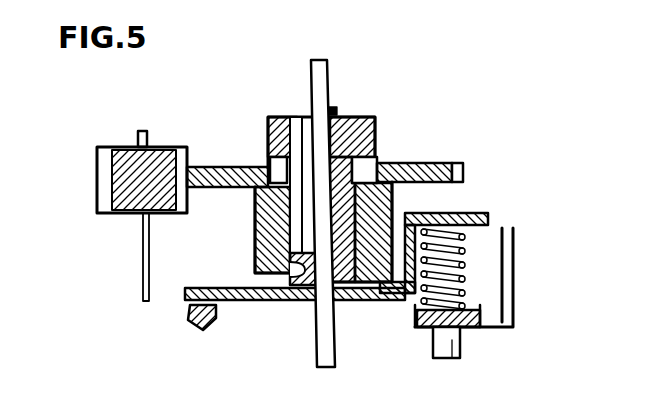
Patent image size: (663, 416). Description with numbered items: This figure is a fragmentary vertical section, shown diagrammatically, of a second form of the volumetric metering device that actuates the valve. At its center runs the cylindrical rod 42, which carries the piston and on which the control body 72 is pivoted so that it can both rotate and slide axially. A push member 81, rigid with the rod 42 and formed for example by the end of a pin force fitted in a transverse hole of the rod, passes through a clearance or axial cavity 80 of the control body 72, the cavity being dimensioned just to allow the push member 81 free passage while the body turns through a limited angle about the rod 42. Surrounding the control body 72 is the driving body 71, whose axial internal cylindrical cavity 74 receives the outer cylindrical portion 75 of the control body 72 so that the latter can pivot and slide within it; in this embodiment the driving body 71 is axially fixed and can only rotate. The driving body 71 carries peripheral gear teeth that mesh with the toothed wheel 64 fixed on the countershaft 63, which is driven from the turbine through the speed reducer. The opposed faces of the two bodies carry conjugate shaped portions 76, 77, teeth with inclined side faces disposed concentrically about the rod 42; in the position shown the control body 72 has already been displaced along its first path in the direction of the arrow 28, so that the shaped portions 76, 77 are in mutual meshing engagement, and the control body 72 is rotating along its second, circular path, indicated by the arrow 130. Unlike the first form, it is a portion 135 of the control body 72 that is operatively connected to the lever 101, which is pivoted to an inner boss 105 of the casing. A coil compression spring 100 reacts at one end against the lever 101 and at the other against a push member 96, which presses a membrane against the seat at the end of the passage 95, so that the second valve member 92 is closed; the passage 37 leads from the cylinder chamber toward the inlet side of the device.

The arrow 28 is at (0, 135).
The arrow 130 is at (287, 153).
The clearance or axial cavity 80 is at (300, 125).
The rod 42 is at (322, 82).
The push member 81 is at (338, 110).
The shaped portion 76 is at (412, 151).
The shaped portion 77 is at (366, 172).
The driving body 71 is at (462, 170).
The control body 72 is at (345, 210).
The lever 101 is at (428, 213).
The passage 37 is at (514, 262).
The coil compression spring 100 is at (465, 283).
The push member 96 is at (463, 328).
The passage 95 is at (452, 348).
The second valve member 92 is at (515, 329).
The portion of the control movable body 135 is at (313, 298).
The inner boss 105 is at (203, 328).
The axial internal cylindrical cavity 74 is at (300, 245).
The outer cylindrical portion 75 is at (290, 274).
The toothed wheel 64 is at (123, 170).
The countershaft 63 is at (143, 258).